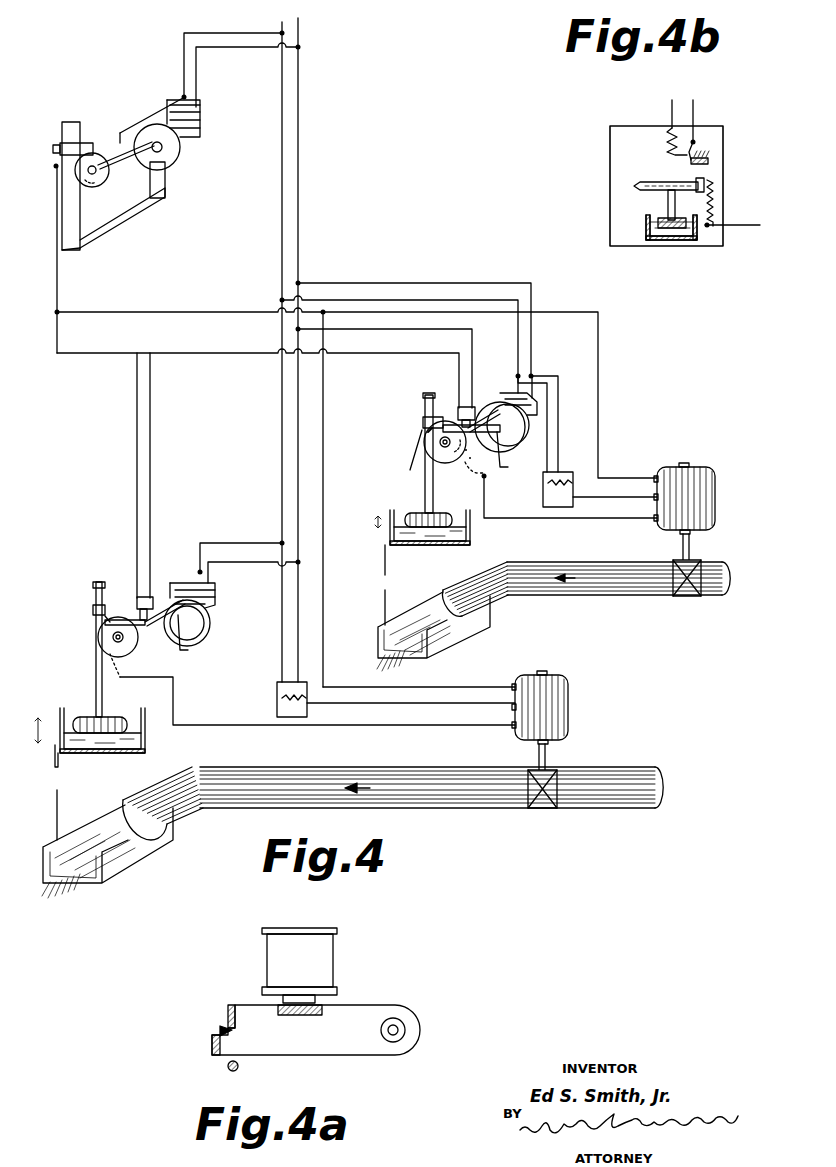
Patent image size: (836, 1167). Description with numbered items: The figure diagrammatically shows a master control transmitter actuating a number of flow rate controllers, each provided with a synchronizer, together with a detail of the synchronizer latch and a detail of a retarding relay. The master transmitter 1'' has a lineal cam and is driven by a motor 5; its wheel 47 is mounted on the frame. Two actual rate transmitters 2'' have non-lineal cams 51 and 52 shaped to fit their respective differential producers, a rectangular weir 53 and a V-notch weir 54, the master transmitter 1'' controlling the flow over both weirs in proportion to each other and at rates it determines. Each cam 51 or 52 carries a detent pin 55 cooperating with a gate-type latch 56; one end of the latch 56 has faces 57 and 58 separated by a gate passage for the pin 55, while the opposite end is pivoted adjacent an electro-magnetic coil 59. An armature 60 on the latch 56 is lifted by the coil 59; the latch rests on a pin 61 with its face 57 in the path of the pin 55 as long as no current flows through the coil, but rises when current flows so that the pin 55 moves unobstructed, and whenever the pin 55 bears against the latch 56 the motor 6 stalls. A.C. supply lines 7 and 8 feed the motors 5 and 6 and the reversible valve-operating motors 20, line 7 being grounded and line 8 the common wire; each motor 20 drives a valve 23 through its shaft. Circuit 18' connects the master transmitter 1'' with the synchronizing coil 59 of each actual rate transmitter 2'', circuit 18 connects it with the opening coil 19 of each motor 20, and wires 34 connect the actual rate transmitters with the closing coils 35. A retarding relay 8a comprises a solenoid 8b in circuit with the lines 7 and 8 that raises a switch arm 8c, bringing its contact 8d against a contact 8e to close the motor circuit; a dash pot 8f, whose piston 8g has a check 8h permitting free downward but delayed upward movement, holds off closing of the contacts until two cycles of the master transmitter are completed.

In FIG. 4, the master transmitter 1'' is at (132, 179).
In FIG. 4, the actual rate transmitter 2'' is at (269, 616).
In FIG. 4, the motor 5 is at (185, 150).
In FIG. 4, the motor 6 is at (527, 436).
In FIG. 4, the A.C. supply line 7 is at (280, 22).
In FIG. 4B, the A.C. supply line 7 is at (670, 101).
In FIG. 4, the A.C. supply line 8 is at (299, 32).
In FIG. 4B, the A.C. supply line 8 is at (694, 104).
In FIG. 4, the retarding relay 8a is at (575, 470).
In FIG. 4B, the solenoid 8b is at (662, 135).
In FIG. 4B, the switch arm 8c is at (657, 190).
In FIG. 4B, the contact 8d is at (705, 182).
In FIG. 4B, the contact 8e is at (710, 162).
In FIG. 4B, the dash pot 8f is at (647, 236).
In FIG. 4B, the piston 8g is at (678, 240).
In FIG. 4B, the check 8h is at (658, 196).
In FIG. 4, the circuit 18 is at (357, 483).
In FIG. 4, the circuit 18' is at (258, 461).
In FIG. 4, the opening coil 19 is at (654, 478).
In FIG. 4, the reversible motor 20 is at (716, 487).
In FIG. 4, the valve 23 is at (690, 597).
In FIG. 4, the wire 34 is at (545, 519).
In FIG. 4, the closing coil 35 is at (660, 528).
In FIG. 4, the gaging wheel 47 is at (92, 152).
In FIG. 4, the non-lineal cam 51 is at (98, 632).
In FIG. 4, the non-lineal cam 52 is at (422, 442).
In FIG. 4, the rectangular weir 53 is at (110, 862).
In FIG. 4, the V-notch weir 54 is at (470, 640).
In FIG. 4, the detent pin 55 is at (435, 440).
In FIG. 4A, the detent pin 55 is at (220, 1028).
In FIG. 4, the latch 56 is at (486, 478).
In FIG. 4A, the latch 56 is at (244, 1004).
In FIG. 4A, the face 57 is at (228, 1022).
In FIG. 4A, the face 58 is at (212, 1045).
In FIG. 4, the electro-magnetic coil 59 is at (460, 407).
In FIG. 4A, the electro-magnetic coil 59 is at (333, 962).
In FIG. 4A, the armature 60 is at (310, 1022).
In FIG. 4A, the pin 61 is at (240, 1069).